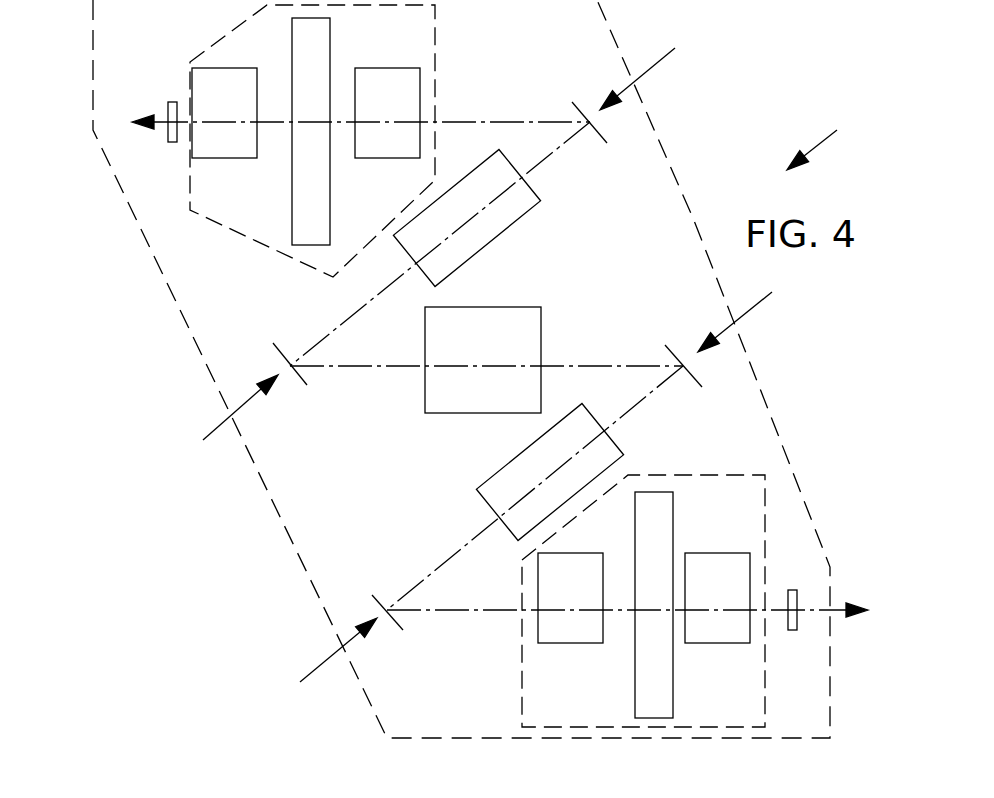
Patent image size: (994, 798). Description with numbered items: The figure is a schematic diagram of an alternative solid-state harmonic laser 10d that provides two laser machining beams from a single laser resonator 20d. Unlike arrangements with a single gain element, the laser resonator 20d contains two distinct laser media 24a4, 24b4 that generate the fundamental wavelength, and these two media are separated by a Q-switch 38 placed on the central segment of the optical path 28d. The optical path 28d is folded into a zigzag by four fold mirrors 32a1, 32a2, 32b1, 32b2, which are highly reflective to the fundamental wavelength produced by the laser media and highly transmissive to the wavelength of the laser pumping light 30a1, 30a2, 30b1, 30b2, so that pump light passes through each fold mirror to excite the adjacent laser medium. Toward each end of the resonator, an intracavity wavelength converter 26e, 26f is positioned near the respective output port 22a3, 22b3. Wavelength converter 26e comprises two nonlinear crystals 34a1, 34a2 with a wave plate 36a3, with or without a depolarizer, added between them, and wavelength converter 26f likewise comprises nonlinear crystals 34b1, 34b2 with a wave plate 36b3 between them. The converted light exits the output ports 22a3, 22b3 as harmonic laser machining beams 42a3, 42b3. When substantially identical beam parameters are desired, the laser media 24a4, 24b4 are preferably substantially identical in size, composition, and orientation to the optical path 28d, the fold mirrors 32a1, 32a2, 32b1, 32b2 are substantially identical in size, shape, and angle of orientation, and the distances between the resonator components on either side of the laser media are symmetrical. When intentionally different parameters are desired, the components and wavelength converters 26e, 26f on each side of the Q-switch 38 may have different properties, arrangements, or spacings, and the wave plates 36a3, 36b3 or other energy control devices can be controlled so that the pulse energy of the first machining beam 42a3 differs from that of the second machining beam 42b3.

The laser 10d is at (830, 135).
The laser resonator 20d is at (683, 185).
The output port 22a3 is at (175, 101).
The output port 22b3 is at (798, 628).
The laser medium 24a4 is at (517, 217).
The laser medium 24b4 is at (498, 468).
The wavelength converter 26e is at (435, 36).
The wavelength converter 26f is at (742, 475).
The optical path 28d is at (472, 120).
The laser pumping light 30a1 is at (643, 73).
The laser pumping light 30a2 is at (218, 425).
The laser pumping light 30b1 is at (323, 662).
The laser pumping light 30b2 is at (752, 313).
The fold mirror 32a1 is at (594, 134).
The fold mirror 32a2 is at (300, 378).
The fold mirror 32b1 is at (375, 598).
The fold mirror 32b2 is at (683, 382).
The nonlinear crystal 34a1 is at (383, 158).
The nonlinear crystal 34a2 is at (222, 158).
The nonlinear crystal 34b1 is at (568, 643).
The nonlinear crystal 34b2 is at (713, 643).
The wave plate 36a3 is at (330, 42).
The wave plate 36b3 is at (674, 527).
The Q-switch 38 is at (541, 325).
The harmonic laser machining beam 42a3 is at (160, 118).
The harmonic laser machining beam 42b3 is at (835, 612).